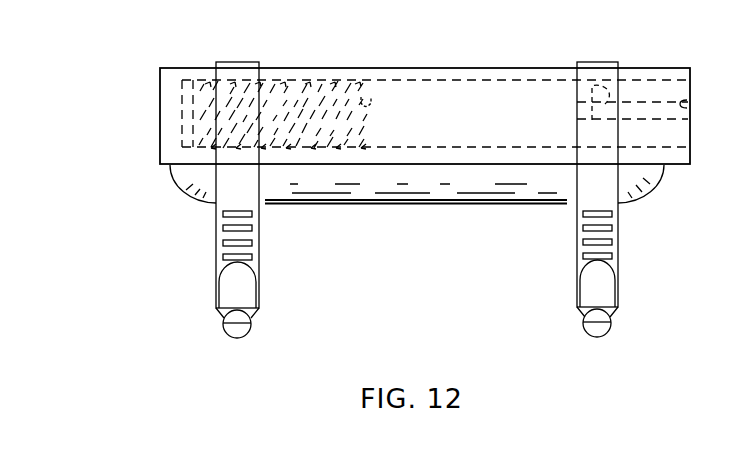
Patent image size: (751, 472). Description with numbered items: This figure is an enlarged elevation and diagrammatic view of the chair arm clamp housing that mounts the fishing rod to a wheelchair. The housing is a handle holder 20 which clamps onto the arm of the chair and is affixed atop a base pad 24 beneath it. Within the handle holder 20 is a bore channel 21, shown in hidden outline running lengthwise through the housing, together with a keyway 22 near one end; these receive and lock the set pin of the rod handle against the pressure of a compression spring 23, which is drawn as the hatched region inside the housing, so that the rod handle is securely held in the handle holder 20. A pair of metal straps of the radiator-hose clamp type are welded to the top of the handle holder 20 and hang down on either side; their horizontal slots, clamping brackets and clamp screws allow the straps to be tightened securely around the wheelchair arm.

The handle holder 20 is at (381, 67).
The bore channel 21 is at (433, 85).
The keyway 22 is at (688, 104).
The compression spring 23 is at (357, 108).
The base pad 24 is at (467, 204).